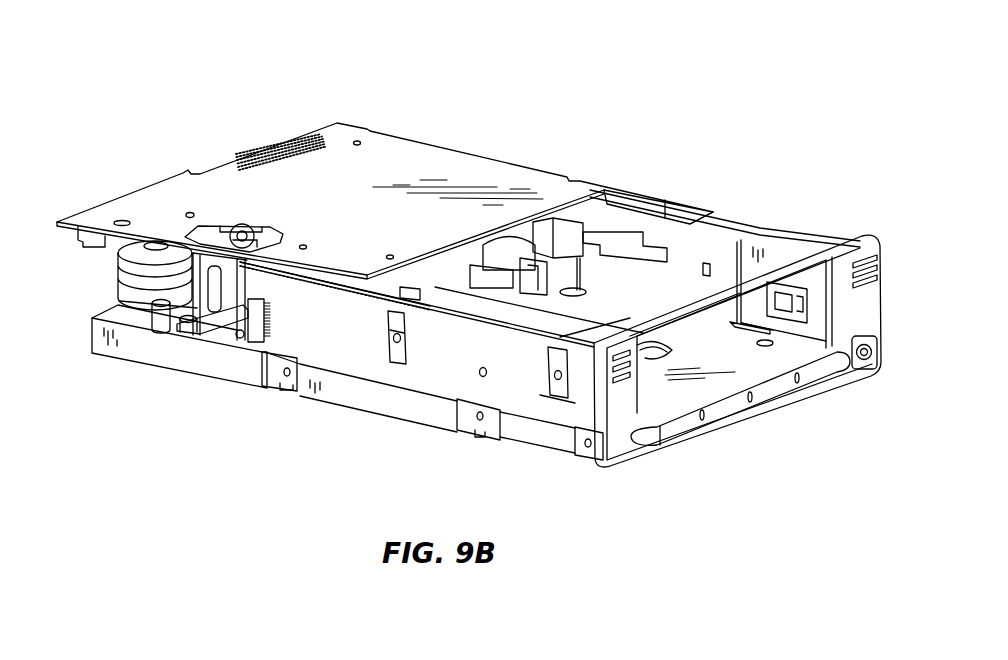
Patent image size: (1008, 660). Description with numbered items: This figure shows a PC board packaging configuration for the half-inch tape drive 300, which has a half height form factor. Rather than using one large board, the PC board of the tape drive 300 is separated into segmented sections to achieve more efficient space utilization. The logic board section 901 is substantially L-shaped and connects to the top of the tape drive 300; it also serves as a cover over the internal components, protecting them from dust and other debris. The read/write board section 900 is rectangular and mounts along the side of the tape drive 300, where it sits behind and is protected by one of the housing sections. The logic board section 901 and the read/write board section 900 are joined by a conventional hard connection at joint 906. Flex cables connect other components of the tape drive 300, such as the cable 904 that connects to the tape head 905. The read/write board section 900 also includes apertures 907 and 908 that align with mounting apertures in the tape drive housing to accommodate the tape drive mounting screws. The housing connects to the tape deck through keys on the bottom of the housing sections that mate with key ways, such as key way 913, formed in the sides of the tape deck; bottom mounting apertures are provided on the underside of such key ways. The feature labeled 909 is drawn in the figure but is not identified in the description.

The half-inch tape drive 300 is at (506, 139).
The logic board section 901 is at (379, 228).
The read/write board section 900 is at (469, 358).
The cable 904 is at (250, 309).
The tape head 905 is at (607, 213).
The joint 906 is at (311, 289).
The aperture 907 is at (672, 203).
The aperture 908 is at (402, 358).
The rail feature 909 is at (563, 397).
The key way 913 is at (273, 377).